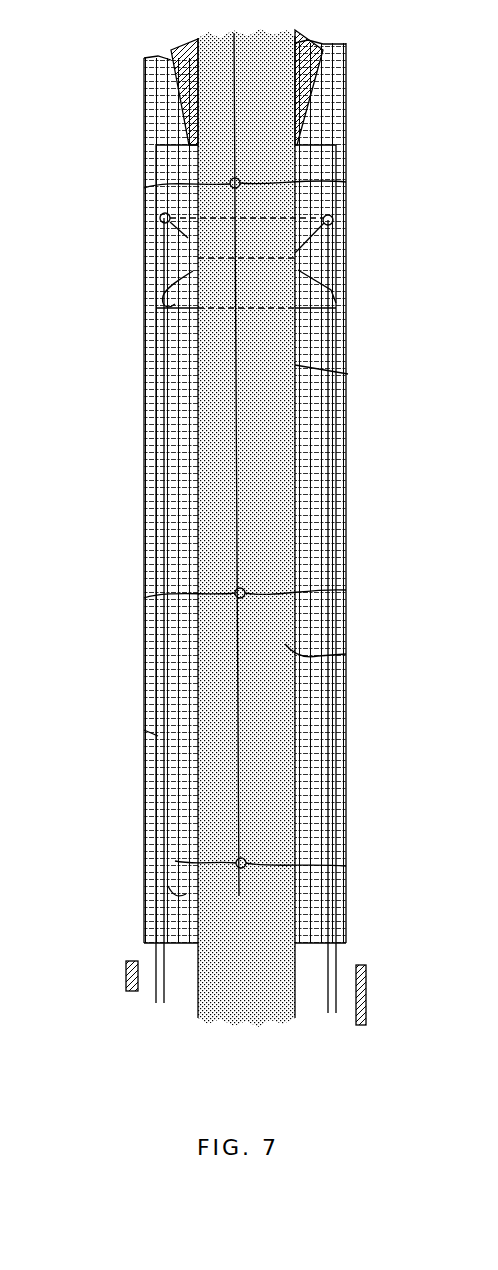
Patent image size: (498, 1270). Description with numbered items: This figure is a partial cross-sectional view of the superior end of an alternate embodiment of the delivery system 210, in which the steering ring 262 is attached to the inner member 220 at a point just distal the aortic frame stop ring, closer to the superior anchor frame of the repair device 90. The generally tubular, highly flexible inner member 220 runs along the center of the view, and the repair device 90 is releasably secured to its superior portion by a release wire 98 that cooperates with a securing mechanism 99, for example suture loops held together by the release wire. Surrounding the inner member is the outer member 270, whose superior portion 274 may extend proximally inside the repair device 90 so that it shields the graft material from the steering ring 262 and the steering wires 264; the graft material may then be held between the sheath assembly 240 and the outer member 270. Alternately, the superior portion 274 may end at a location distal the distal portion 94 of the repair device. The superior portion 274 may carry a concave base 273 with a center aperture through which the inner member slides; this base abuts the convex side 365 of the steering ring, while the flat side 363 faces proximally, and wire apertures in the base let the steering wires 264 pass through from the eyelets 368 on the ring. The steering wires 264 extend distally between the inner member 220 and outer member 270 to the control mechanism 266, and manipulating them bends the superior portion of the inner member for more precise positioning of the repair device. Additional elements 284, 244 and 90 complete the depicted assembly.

The delivery system 210 is at (80, 520).
The control mechanism 266 is at (172, 80).
The superior portion of the outer member 274 is at (340, 147).
The concave base 273 is at (147, 320).
The steering wires 264 is at (157, 800).
The distal portion of the repair device 94 is at (338, 918).
The release wire 98 is at (230, 512).
The securing mechanism 99 is at (136, 178).
The pivot loop 368 is at (152, 212).
The steering ring 262 is at (177, 227).
The connecting link 363 is at (325, 208).
The connecting link 365 is at (345, 267).
The wall region 284 is at (340, 366).
The inner member 220 is at (338, 646).
The outer member 270 is at (136, 722).
The repair device 90 is at (165, 885).
The left anchor block 244 is at (120, 955).
The sheath assembly 240 is at (120, 982).